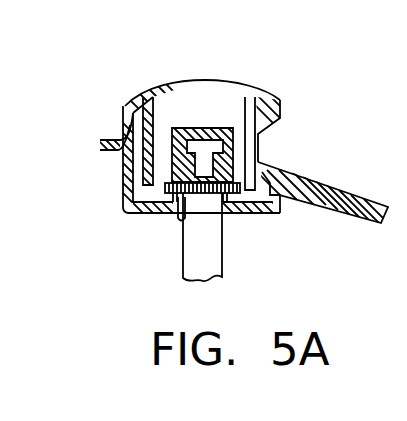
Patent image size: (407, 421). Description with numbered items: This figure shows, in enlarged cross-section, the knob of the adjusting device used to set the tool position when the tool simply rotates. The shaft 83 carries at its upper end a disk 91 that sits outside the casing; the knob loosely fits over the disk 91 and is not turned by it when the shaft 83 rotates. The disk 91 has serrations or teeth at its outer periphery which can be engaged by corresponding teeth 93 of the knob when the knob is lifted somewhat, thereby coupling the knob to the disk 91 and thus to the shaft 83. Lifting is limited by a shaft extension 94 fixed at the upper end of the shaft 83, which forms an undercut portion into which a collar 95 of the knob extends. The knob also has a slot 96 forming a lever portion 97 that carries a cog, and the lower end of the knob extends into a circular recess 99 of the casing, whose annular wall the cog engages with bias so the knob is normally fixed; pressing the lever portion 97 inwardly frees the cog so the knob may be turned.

The shaft 83 is at (213, 263).
The disk 91 is at (206, 202).
The teeth 93 is at (182, 205).
The shaft extension 94 is at (197, 139).
The collar 95 is at (250, 155).
The slot 96 is at (221, 142).
The lever portion 97 is at (282, 113).
The circular recess 99 is at (137, 147).